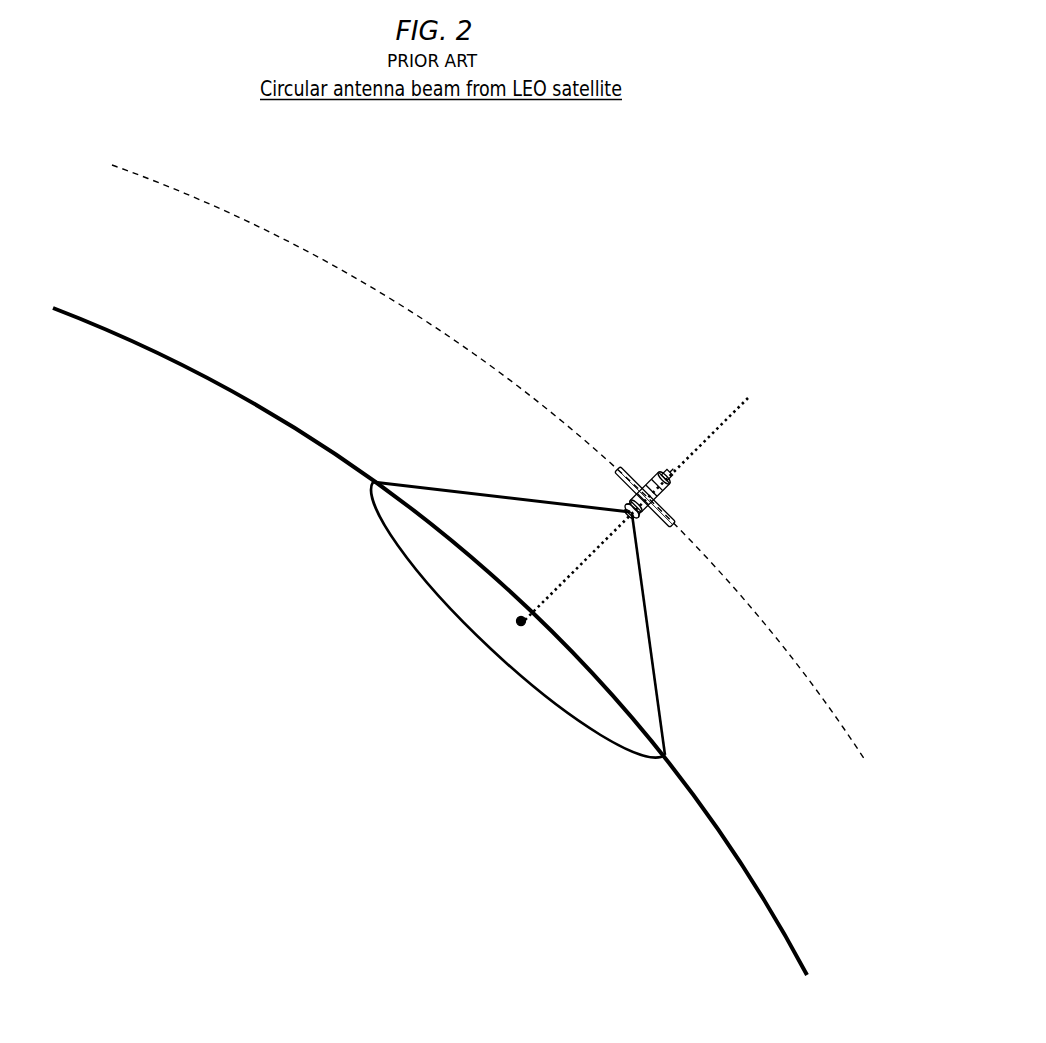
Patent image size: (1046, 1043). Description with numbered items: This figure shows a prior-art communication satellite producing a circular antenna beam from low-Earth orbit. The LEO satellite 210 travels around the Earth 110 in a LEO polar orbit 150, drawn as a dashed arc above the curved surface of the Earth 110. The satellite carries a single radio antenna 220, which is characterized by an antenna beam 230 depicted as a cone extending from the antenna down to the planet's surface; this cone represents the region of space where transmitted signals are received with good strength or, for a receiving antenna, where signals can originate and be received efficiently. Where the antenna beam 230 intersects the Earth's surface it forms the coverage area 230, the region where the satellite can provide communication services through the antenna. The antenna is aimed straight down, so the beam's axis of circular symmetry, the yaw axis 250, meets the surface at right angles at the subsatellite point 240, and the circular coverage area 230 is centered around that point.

The Earth 110 is at (750, 858).
The LEO polar orbit 150 is at (300, 245).
The LEO satellite 210 is at (672, 490).
The radio antenna 220 is at (628, 506).
The antenna beam / coverage area 230 is at (480, 644).
The subsatellite point 240 is at (520, 620).
The yaw axis 250 is at (746, 405).